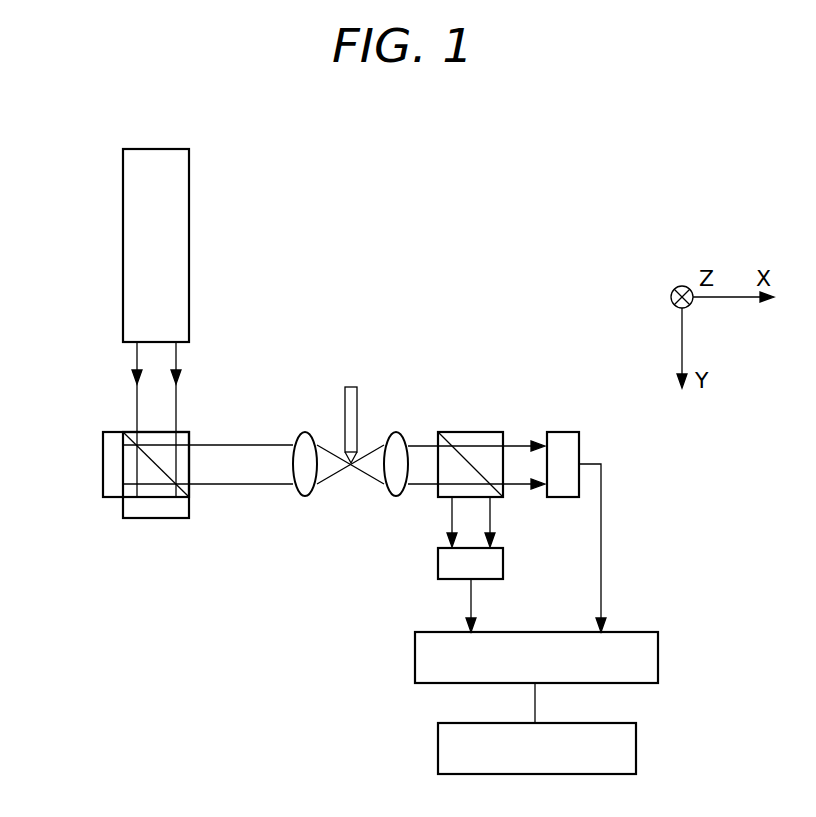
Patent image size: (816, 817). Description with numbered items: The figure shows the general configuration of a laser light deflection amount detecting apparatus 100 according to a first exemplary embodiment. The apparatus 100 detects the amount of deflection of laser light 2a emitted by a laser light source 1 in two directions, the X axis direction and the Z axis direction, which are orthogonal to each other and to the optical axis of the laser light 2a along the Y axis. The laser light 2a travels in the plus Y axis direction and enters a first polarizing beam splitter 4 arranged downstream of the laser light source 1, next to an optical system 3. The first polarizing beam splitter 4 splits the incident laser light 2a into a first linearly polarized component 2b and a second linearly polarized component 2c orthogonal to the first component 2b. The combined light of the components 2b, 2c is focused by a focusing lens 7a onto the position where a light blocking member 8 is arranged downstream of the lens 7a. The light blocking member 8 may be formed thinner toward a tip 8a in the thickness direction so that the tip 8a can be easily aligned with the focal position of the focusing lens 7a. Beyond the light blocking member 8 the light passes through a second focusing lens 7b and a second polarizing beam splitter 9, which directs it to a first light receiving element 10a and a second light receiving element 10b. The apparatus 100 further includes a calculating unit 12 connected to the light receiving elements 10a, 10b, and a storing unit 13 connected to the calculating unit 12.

The laser light deflection amount detecting apparatus 100 is at (522, 196).
The laser light source 1 is at (189, 238).
The laser light 2a is at (137, 396).
The first linearly polarized component 2b is at (222, 486).
The second linearly polarized component 2c is at (272, 486).
The optical system 3 is at (92, 465).
The first polarizing beam splitter 4 is at (190, 432).
The focusing lens 7a is at (303, 432).
The focusing lens 7b is at (402, 432).
The light blocking member 8 is at (350, 387).
The tip 8a is at (348, 470).
The second polarizing beam splitter 9 is at (470, 432).
The first light receiving element 10a is at (438, 566).
The second light receiving element 10b is at (565, 432).
The calculating unit 12 is at (658, 656).
The storing unit 13 is at (636, 746).